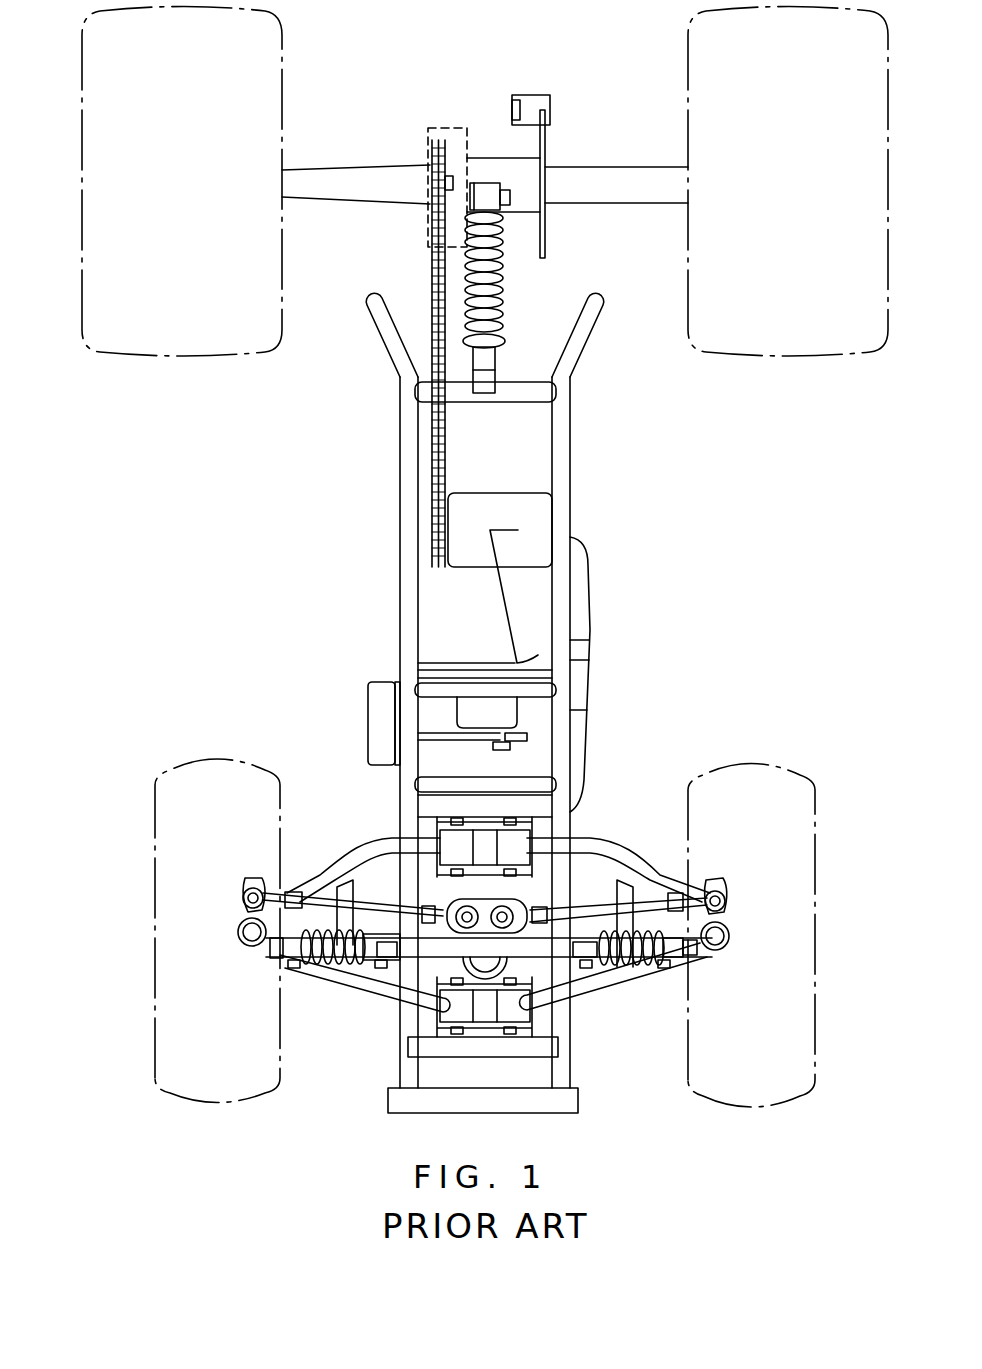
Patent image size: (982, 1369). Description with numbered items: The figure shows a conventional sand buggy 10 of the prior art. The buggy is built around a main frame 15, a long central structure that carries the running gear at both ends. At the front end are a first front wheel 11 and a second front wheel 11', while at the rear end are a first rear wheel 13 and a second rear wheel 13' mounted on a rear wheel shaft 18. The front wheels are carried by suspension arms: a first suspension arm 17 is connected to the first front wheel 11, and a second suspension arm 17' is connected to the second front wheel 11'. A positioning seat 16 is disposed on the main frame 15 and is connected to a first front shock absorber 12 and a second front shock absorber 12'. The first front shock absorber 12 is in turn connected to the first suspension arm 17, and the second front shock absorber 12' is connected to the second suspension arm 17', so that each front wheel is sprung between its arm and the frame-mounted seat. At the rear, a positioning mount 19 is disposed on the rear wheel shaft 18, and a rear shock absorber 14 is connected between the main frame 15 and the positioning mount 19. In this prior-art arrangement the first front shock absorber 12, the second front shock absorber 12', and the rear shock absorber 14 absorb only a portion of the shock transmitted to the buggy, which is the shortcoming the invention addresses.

The conventional sand buggy 10 is at (170, 608).
The first front wheel 11 is at (751, 960).
The second front wheel 11' is at (217, 955).
The first front shock absorber 12 is at (635, 978).
The second front shock absorber 12' is at (335, 974).
The first rear wheel 13 is at (788, 208).
The second rear wheel 13' is at (182, 209).
The rear shock absorber 14 is at (505, 290).
The main frame 15 is at (400, 618).
The positioning seat 16 is at (487, 945).
The first suspension arm 17 is at (614, 990).
The second suspension arm 17' is at (365, 1002).
The rear wheel shaft 18 is at (490, 165).
The positioning mount 19 is at (508, 206).